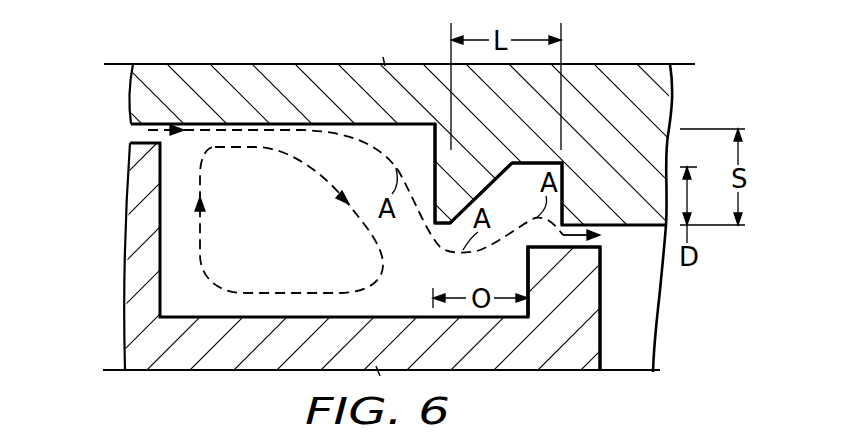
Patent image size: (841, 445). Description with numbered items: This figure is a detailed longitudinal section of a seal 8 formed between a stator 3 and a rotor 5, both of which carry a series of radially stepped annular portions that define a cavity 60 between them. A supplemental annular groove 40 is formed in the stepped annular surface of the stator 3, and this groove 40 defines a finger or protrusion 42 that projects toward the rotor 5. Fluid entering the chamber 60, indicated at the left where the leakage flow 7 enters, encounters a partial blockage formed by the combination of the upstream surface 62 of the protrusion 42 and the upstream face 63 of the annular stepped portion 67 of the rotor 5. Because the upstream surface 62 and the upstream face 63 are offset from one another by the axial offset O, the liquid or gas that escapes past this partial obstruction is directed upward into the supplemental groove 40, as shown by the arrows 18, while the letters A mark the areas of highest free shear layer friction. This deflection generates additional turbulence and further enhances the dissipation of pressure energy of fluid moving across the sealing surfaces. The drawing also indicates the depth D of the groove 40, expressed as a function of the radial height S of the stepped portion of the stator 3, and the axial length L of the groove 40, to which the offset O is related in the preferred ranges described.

The stator 3 is at (163, 62).
The rotor 5 is at (128, 254).
The inlet leakage flow 7 is at (120, 127).
The seal 8 is at (94, 308).
The arrows 18 is at (338, 148).
The supplemental annular groove 40 is at (529, 203).
The protrusion 42 is at (491, 173).
The cavity 60 is at (284, 239).
The upstream surface of the protrusion 62 is at (430, 158).
The upstream face of the annular stepped portion 63 is at (527, 282).
The annular stepped portion of the rotor 67 is at (577, 290).